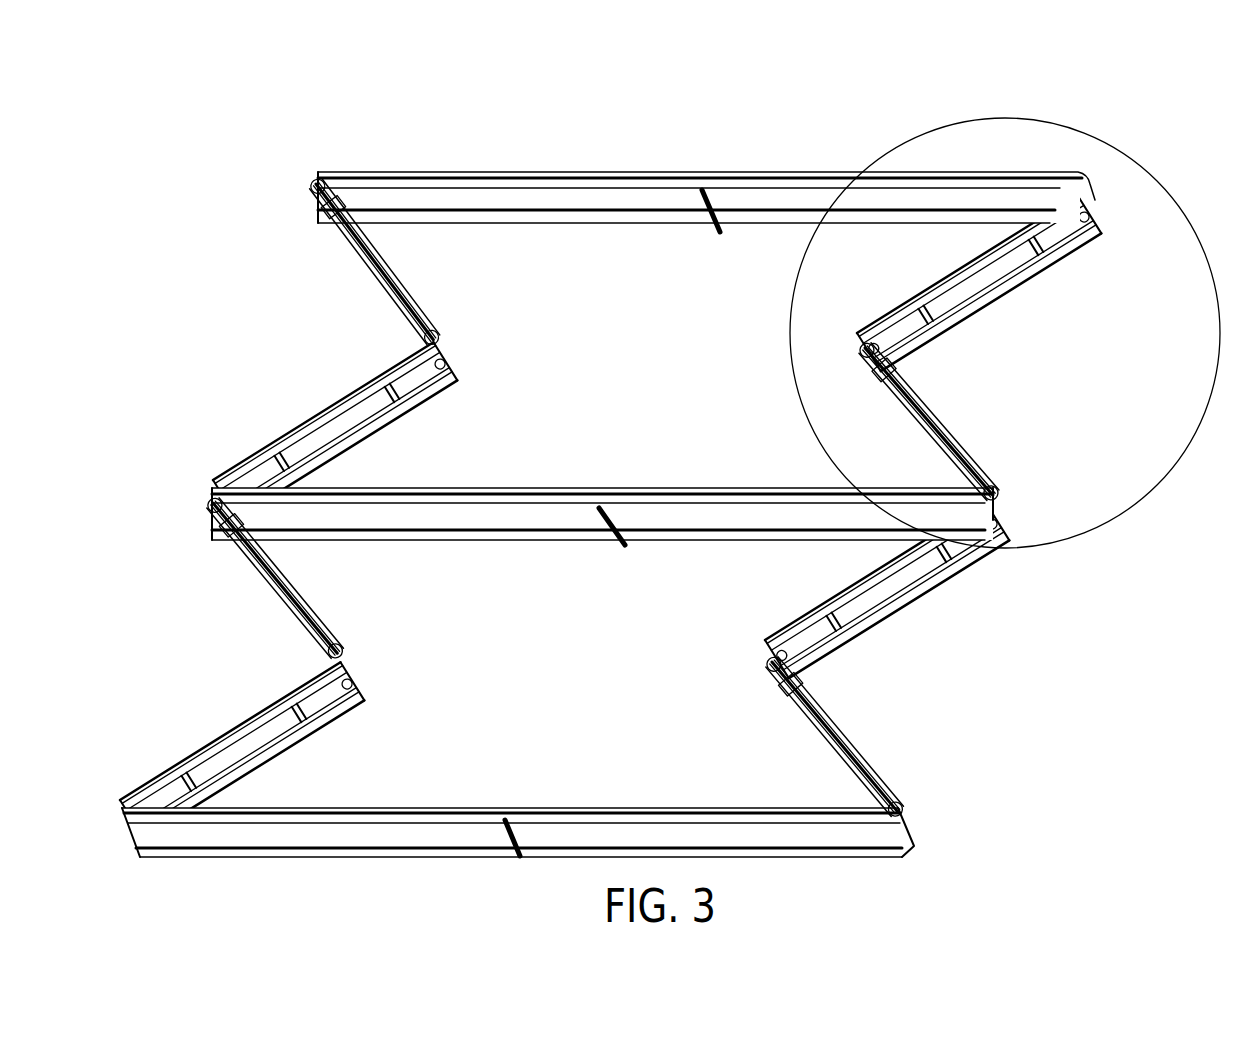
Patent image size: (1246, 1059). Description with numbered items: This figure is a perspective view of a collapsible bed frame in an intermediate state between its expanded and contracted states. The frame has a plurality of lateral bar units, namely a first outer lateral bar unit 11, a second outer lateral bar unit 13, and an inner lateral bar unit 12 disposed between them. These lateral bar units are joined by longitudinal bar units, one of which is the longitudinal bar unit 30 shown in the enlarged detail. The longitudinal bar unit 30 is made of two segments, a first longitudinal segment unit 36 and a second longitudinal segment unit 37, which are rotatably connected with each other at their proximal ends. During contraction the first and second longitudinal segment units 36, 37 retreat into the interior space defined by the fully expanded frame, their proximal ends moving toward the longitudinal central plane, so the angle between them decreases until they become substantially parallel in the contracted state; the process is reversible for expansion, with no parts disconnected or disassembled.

The first outer lateral bar unit 11 is at (582, 172).
The inner lateral bar unit 12 is at (690, 486).
The second outer lateral bar unit 13 is at (627, 806).
The longitudinal bar unit 30 is at (918, 135).
The first longitudinal segment unit 36 is at (990, 256).
The second longitudinal segment unit 37 is at (952, 420).